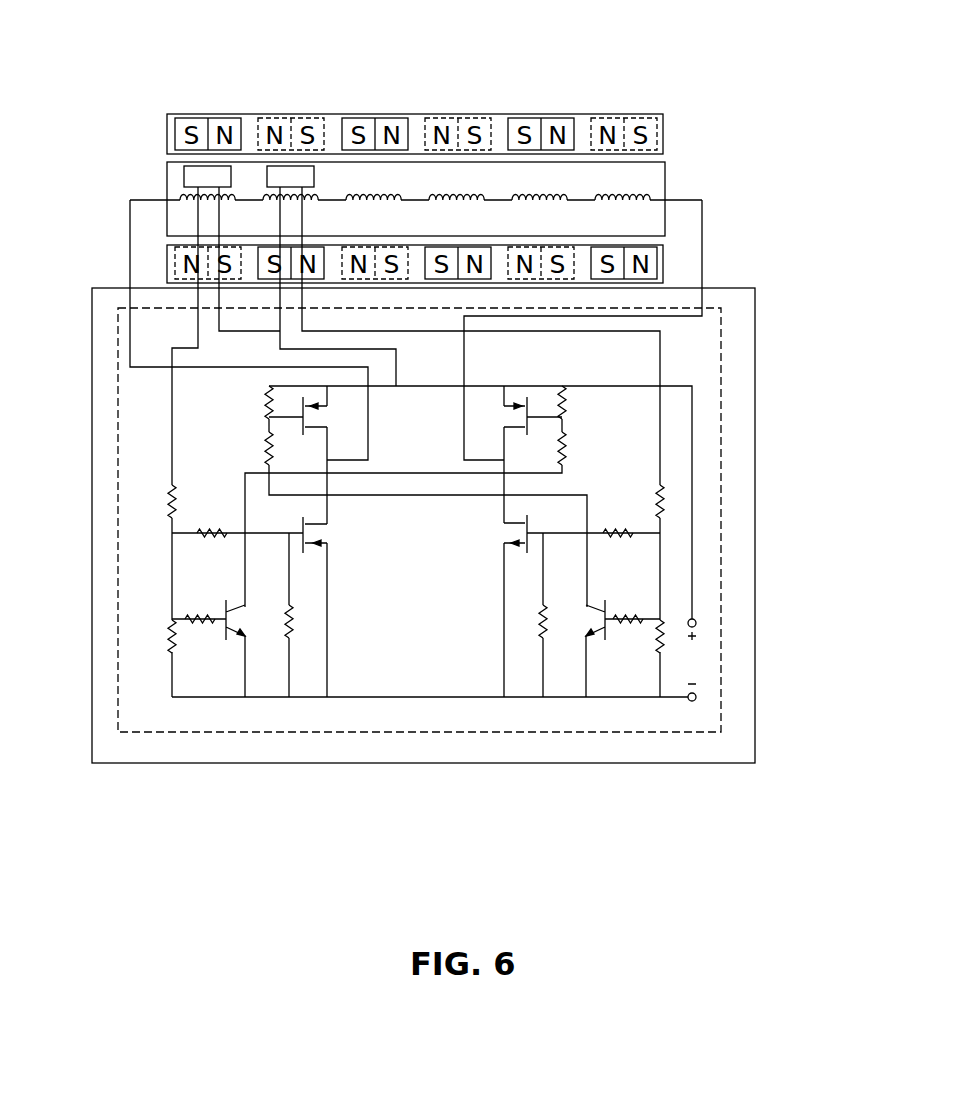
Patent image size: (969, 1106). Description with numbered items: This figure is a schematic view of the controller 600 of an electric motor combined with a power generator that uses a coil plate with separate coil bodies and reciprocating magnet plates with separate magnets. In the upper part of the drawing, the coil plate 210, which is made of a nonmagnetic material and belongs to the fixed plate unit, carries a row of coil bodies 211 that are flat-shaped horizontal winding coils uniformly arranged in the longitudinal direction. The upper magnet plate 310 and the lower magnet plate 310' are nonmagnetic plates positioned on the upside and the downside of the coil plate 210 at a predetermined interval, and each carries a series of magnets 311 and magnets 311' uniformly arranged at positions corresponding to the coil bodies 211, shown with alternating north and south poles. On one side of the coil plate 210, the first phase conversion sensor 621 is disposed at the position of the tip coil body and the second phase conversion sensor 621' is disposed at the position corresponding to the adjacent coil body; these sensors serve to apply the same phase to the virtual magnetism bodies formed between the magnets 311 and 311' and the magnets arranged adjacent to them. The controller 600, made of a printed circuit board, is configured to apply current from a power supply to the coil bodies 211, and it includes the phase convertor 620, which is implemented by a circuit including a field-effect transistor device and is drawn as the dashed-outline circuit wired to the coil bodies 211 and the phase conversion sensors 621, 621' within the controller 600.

The controller 600 is at (403, 763).
The phase convertor 620 is at (721, 363).
The upper magnet plate 310 is at (413, 80).
The magnets 311 is at (410, 82).
The coil plate 210 is at (416, 260).
The coil bodies 211 is at (378, 197).
The first phase conversion sensor 621 is at (174, 276).
The second phase conversion sensor 621' is at (463, 264).
The lower magnet plate 310' is at (486, 213).
The magnets 311' is at (474, 211).